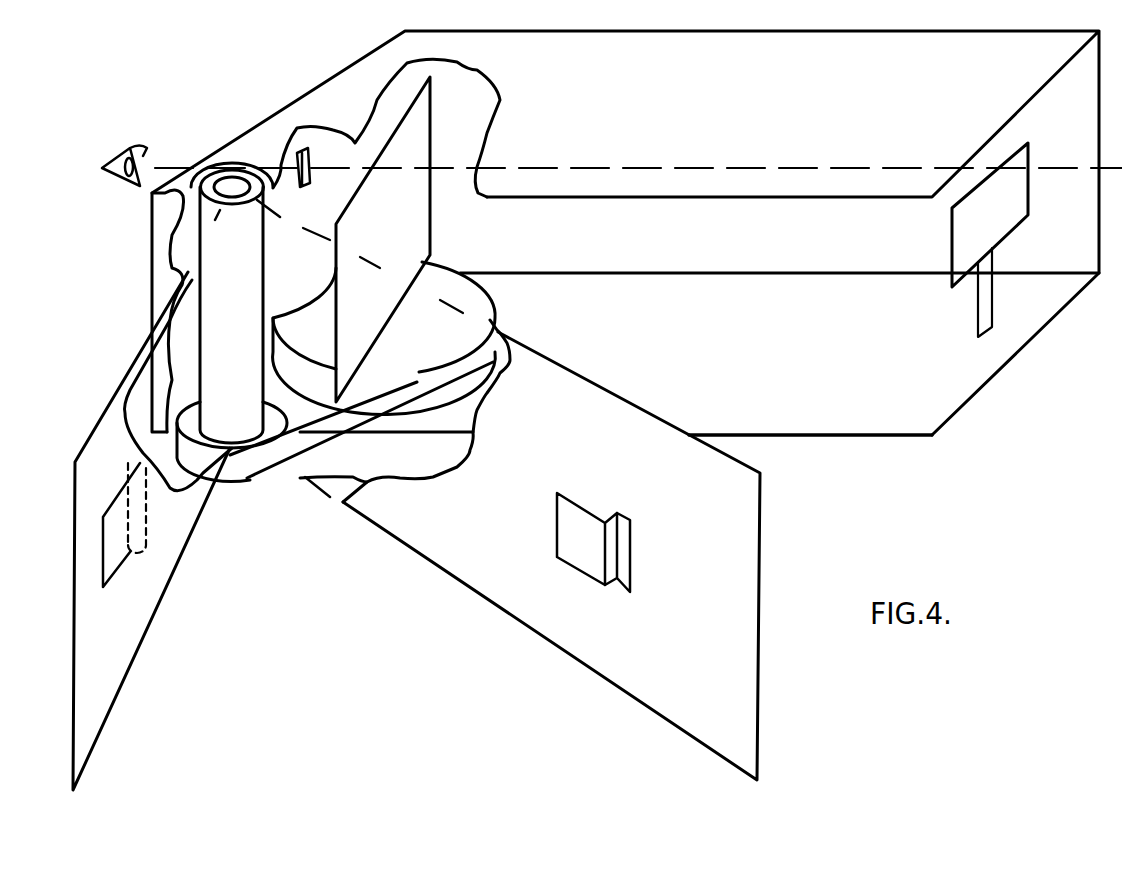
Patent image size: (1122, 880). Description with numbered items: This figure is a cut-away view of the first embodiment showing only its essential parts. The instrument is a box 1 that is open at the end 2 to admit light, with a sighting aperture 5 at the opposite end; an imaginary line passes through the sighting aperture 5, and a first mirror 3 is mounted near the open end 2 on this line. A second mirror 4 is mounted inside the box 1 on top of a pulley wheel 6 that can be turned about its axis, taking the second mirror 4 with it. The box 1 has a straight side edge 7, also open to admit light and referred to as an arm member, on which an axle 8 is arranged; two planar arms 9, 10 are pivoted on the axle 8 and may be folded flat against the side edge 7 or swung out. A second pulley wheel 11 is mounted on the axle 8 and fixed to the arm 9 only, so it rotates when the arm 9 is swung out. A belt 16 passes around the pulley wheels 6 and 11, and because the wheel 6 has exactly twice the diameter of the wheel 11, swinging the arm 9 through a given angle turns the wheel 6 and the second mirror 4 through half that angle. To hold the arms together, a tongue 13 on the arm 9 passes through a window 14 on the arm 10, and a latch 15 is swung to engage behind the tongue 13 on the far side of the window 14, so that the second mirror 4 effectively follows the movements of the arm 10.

The box 1 is at (732, 121).
The open end 2 is at (983, 360).
The first mirror 3 is at (965, 230).
The second mirror 4 is at (415, 222).
The sighting aperture 5 is at (297, 148).
The pulley wheel 6 is at (480, 308).
The straight side edge 7 is at (876, 420).
The axle 8 is at (215, 235).
The planar arm 9 is at (667, 578).
The planar arm 10 is at (112, 666).
The second pulley wheel 11 is at (242, 450).
The tongue 13 is at (570, 520).
The window 14 is at (122, 550).
The latch 15 is at (133, 460).
The belt 16 is at (300, 448).